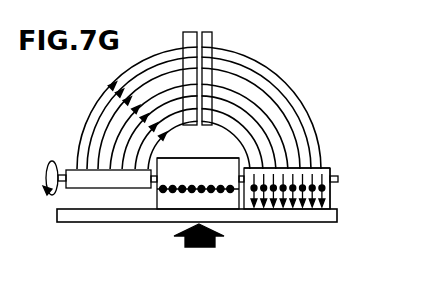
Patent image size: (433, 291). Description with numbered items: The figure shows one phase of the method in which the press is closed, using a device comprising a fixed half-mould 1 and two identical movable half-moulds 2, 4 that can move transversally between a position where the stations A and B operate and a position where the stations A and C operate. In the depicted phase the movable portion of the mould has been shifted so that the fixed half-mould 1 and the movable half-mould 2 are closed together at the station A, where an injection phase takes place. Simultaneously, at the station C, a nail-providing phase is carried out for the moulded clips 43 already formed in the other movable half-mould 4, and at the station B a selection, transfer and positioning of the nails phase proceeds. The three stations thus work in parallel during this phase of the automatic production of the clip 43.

The fixed half-mould 1 is at (212, 172).
The movable half-mould 2 is at (175, 200).
The movable half-mould 4 is at (287, 205).
The clip 43 is at (333, 190).
The station A is at (181, 131).
The station B is at (65, 166).
The station C is at (332, 164).